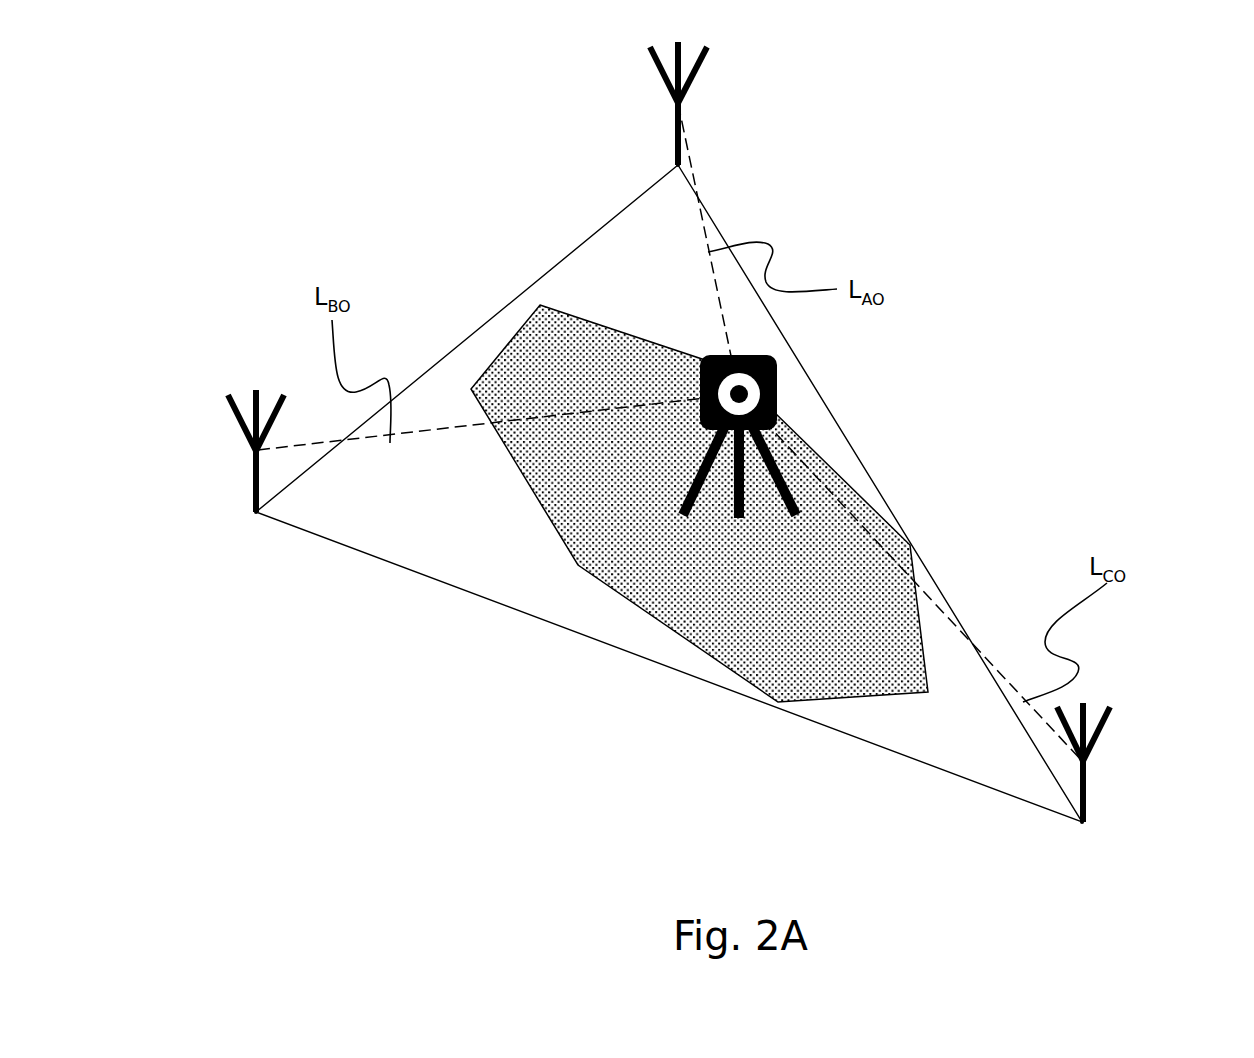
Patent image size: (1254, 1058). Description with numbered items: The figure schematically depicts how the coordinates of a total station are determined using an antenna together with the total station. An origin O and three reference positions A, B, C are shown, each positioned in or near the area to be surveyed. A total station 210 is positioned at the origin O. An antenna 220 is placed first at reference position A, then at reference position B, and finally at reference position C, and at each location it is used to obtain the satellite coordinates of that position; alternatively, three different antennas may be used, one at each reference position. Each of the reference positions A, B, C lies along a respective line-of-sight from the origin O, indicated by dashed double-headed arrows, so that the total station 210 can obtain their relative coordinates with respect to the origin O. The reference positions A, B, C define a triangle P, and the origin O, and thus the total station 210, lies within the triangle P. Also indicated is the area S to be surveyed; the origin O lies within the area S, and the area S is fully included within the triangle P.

The total station 210 is at (794, 396).
The antenna 220 is at (637, 83).
The triangle P is at (473, 335).
The area to be surveyed S is at (699, 503).
The origin O is at (750, 528).
The reference position A is at (661, 160).
The reference position B is at (249, 512).
The reference position C is at (1097, 823).